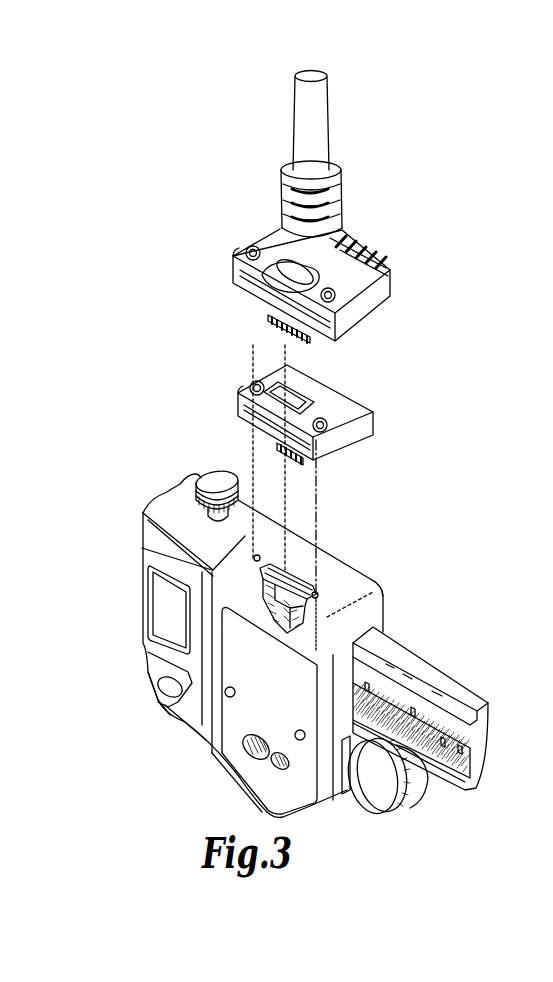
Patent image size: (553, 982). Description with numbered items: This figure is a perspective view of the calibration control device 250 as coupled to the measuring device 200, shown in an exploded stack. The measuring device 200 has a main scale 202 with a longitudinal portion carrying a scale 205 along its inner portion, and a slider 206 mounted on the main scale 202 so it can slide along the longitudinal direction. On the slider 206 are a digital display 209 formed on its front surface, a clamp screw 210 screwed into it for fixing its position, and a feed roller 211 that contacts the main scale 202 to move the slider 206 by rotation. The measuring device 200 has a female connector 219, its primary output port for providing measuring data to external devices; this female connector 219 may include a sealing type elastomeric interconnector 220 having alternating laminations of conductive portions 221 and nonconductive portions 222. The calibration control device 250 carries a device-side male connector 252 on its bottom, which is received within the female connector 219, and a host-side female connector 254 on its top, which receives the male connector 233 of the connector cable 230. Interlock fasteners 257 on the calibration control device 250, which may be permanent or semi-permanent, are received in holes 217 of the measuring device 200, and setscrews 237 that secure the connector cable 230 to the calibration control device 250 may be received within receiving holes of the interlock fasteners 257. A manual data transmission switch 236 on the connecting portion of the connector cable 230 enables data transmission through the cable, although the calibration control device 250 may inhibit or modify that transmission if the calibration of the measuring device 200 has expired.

The measuring device 200 is at (407, 545).
The main scale 202 is at (436, 672).
The scale 205 is at (447, 685).
The slider 206 is at (384, 592).
The digital display 209 is at (160, 600).
The clamp screw 210 is at (214, 472).
The feed roller 211 is at (384, 790).
The holes 217 is at (318, 594).
The female connector 219 is at (278, 572).
The sealing type elastomeric interconnector 220 is at (108, 716).
The conductive portions 221 is at (292, 606).
The nonconductive portions 222 is at (282, 640).
The connector cable 230 is at (390, 160).
The male connector 233 is at (268, 335).
The data transmission switch 236 is at (277, 240).
The setscrews 237 is at (233, 285).
The calibration control device 250 is at (387, 410).
The device-side male connector 252 is at (305, 462).
The host-side female connector 254 is at (293, 400).
The interlock fasteners 257 is at (241, 430).